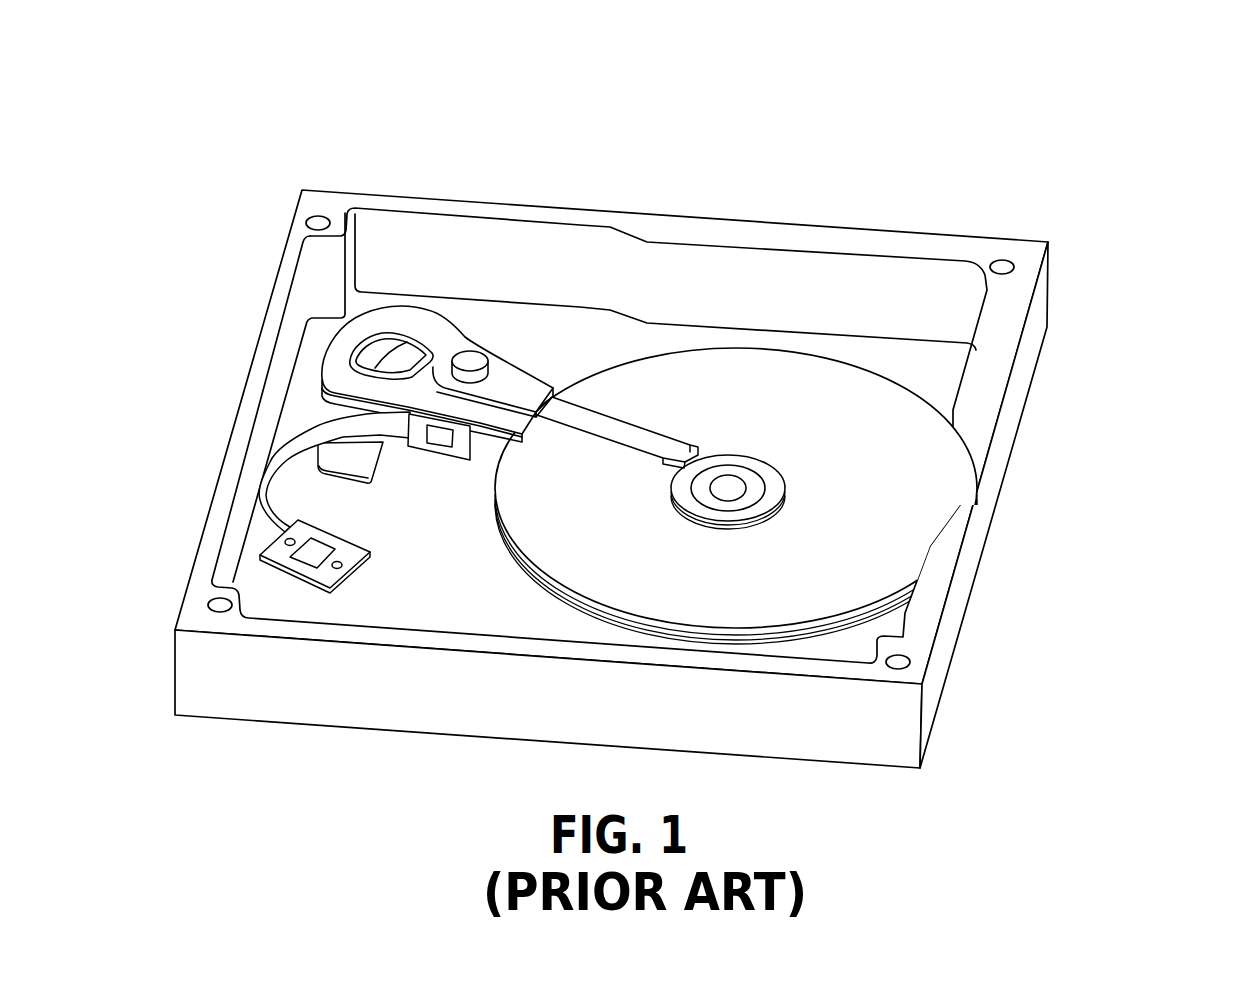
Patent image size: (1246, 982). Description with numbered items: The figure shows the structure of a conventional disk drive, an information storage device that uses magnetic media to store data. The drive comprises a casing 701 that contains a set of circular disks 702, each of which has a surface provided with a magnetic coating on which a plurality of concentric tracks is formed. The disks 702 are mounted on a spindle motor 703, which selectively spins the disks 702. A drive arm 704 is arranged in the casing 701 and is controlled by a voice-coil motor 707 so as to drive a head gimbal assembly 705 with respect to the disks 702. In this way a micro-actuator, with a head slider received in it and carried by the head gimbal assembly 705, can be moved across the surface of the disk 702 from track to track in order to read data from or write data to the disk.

The casing 701 is at (955, 613).
The circular disks 702 is at (890, 452).
The spindle motor 703 is at (777, 498).
The drive arm 704 is at (518, 392).
The head gimbal assembly 705 is at (637, 433).
The voice-coil motor 707 is at (357, 455).